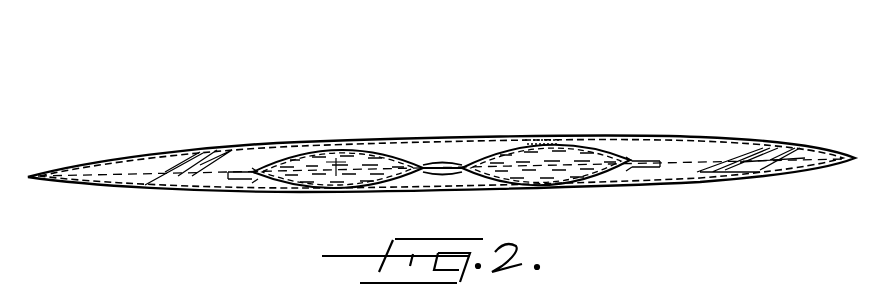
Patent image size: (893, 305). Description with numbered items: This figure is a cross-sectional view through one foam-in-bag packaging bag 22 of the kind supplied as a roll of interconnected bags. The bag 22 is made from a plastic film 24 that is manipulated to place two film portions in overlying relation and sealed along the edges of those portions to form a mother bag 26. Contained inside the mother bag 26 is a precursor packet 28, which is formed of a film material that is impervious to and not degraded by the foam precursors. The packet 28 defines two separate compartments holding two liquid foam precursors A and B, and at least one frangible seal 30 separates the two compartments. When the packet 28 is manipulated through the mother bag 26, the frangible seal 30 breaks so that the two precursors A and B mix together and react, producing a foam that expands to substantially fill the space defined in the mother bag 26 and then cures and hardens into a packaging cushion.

The foam-in-bag packaging bag 22 is at (551, 92).
The plastic film 24 is at (690, 137).
The mother bag 26 is at (157, 150).
The precursor packet 28 is at (258, 154).
The frangible seal 30 is at (448, 167).
The liquid foam precursor A is at (335, 163).
The liquid foam precursor B is at (572, 165).